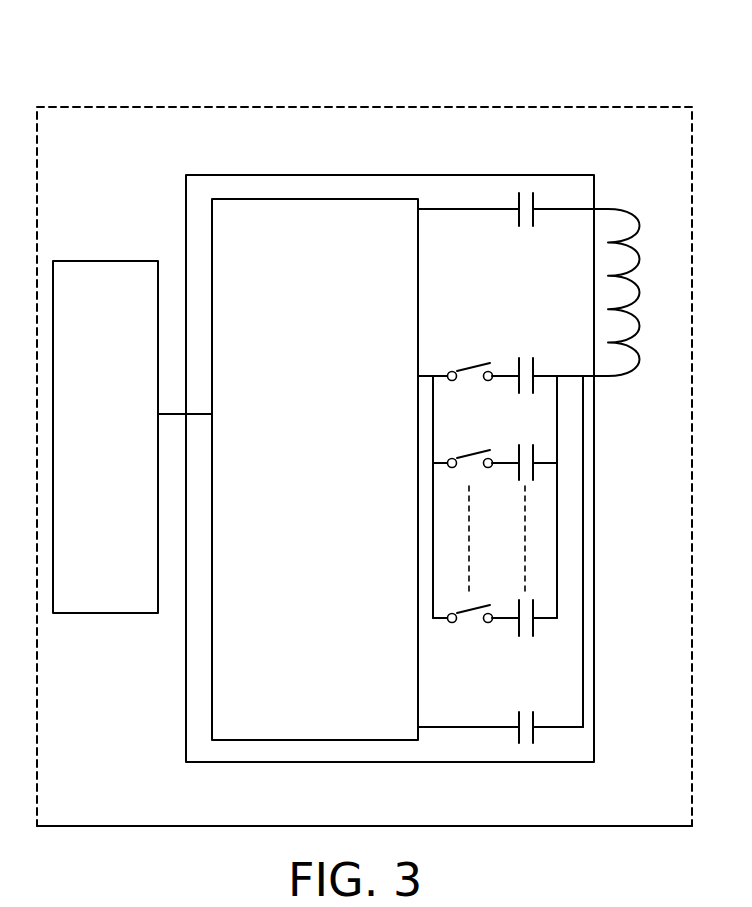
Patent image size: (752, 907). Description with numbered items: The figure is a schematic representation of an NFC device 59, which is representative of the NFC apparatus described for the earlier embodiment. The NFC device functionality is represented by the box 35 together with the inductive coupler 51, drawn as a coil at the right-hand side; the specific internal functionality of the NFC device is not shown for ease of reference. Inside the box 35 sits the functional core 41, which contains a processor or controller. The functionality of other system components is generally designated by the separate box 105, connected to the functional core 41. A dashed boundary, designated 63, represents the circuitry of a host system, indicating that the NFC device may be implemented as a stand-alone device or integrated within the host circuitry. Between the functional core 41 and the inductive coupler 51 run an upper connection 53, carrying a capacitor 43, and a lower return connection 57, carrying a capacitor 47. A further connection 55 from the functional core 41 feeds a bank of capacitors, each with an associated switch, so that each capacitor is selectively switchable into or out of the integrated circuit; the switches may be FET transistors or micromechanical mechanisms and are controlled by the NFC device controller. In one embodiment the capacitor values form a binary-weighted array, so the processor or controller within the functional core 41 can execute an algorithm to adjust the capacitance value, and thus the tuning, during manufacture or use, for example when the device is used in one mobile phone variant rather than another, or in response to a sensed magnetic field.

The NFC device 59 is at (100, 84).
The host system circuitry 63 is at (127, 827).
The box representing NFC device functionality 35 is at (313, 174).
The functional core 41 is at (235, 195).
The other system components 105 is at (130, 382).
The first output line 53 is at (427, 200).
The capacitor 43 is at (542, 192).
The inductive coupler 51 is at (633, 373).
The second output line 55 is at (425, 368).
The return line 57 is at (428, 724).
The capacitor 47 is at (534, 739).